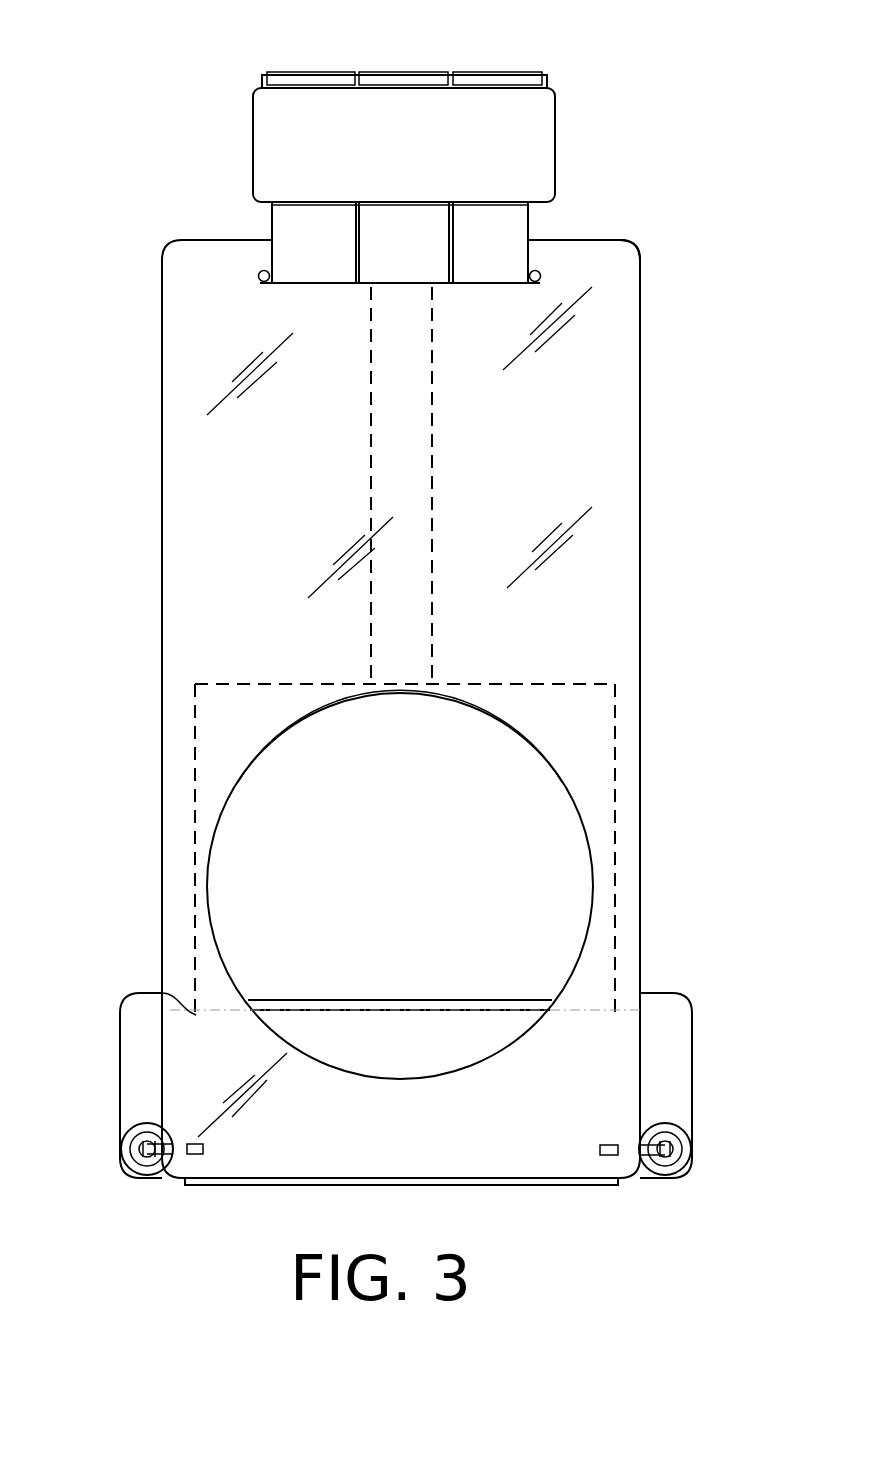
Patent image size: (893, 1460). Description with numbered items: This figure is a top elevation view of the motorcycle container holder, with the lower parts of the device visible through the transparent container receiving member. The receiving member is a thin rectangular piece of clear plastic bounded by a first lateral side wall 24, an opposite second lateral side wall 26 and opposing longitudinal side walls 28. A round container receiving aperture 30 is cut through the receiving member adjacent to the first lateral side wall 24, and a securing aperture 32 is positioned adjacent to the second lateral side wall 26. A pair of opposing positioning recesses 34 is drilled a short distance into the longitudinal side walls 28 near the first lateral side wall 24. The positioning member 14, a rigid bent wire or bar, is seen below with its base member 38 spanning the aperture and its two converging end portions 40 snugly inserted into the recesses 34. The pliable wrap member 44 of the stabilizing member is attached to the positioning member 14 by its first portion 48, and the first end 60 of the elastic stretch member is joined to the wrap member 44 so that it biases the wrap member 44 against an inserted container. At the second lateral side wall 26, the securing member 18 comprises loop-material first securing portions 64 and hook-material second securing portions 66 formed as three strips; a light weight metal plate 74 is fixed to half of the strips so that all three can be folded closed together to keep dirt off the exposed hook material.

The positioning member 14 is at (247, 1000).
The securing member 18 is at (272, 225).
The first lateral side wall 24 is at (510, 1185).
The second lateral side wall 26 is at (607, 240).
The longitudinal side walls 28 is at (640, 545).
The container receiving aperture 30 is at (490, 808).
The securing aperture 32 is at (262, 283).
The positioning recesses 34 is at (203, 1150).
The base member 38 is at (430, 1000).
The end portions 40 is at (145, 1155).
The wrap member 44 is at (118, 1038).
The first portion 48 is at (138, 1077).
The first end 60 is at (398, 684).
The first securing portion 64 is at (327, 253).
The second securing portion 66 is at (303, 75).
The metal plate 74 is at (518, 158).